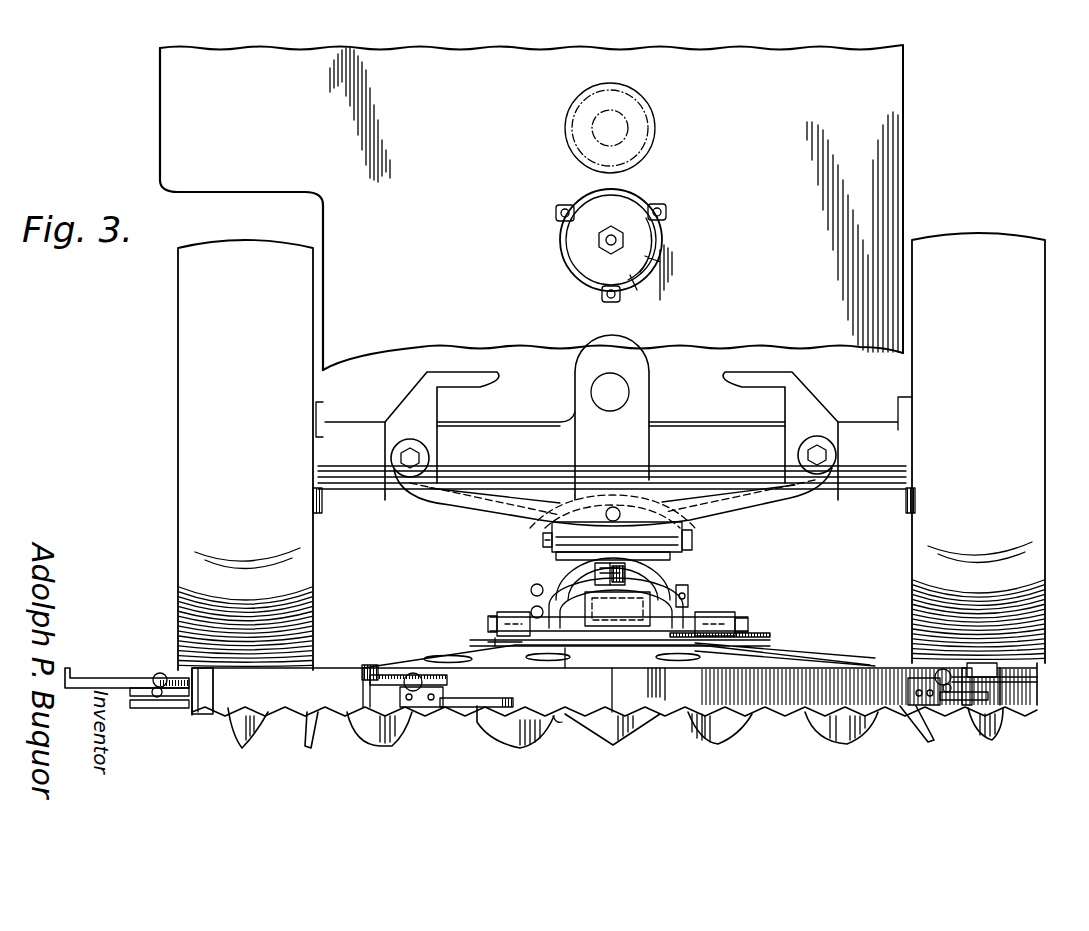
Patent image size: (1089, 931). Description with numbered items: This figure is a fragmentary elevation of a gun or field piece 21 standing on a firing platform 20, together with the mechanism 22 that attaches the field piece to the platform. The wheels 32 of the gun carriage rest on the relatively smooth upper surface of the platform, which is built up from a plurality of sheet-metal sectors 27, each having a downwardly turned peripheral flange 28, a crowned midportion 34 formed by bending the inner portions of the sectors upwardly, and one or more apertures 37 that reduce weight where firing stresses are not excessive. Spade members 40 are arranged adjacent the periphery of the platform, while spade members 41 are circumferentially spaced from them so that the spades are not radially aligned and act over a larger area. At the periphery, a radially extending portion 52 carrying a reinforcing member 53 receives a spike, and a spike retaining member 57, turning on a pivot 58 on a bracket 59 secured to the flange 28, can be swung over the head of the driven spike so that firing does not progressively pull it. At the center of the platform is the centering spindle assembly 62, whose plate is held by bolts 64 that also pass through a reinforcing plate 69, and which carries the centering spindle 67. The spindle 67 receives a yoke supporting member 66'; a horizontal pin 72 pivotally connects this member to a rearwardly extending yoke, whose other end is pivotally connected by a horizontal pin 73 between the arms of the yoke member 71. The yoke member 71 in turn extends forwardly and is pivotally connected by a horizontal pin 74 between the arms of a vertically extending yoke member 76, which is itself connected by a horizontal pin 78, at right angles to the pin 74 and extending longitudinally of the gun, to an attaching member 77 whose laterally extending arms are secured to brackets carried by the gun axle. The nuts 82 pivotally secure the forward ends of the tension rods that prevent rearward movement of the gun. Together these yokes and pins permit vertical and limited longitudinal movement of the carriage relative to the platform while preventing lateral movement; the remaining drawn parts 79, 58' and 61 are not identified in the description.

The gun or field piece 21 is at (913, 192).
The wheels 32 is at (184, 299).
The pivot lug 79 is at (410, 480).
The attaching member 77 is at (762, 500).
The horizontal pin 78 is at (613, 507).
The horizontal pin 74 is at (692, 545).
The vertically extending yoke member 76 is at (543, 542).
The attaching mechanism 22 is at (535, 554).
The yoke member 71 is at (660, 584).
The centering spindle 67 is at (594, 573).
The centering spindle assembly 62 is at (676, 588).
The horizontal pin 73 is at (689, 596).
The bolts 64 is at (560, 602).
The reinforcing plate 69 is at (538, 594).
The nuts 82 is at (742, 620).
The crowned midportion 34 is at (733, 645).
The firing platform 20 is at (400, 658).
The apertures 37 is at (452, 654).
The sectors 27 is at (870, 660).
The peripheral flange 28 is at (302, 710).
The bolt 58' is at (546, 668).
The yoke supporting member 66' is at (600, 680).
The horizontal pin 72 is at (686, 648).
The spade members 40 is at (242, 750).
The spade members 41 is at (325, 745).
The notch 61 is at (553, 724).
The spike retaining member 57 is at (118, 680).
The pivot 58 is at (548, 658).
The bracket 59 is at (132, 696).
The reinforcing member 53 is at (162, 708).
The extending portion 52 is at (200, 716).